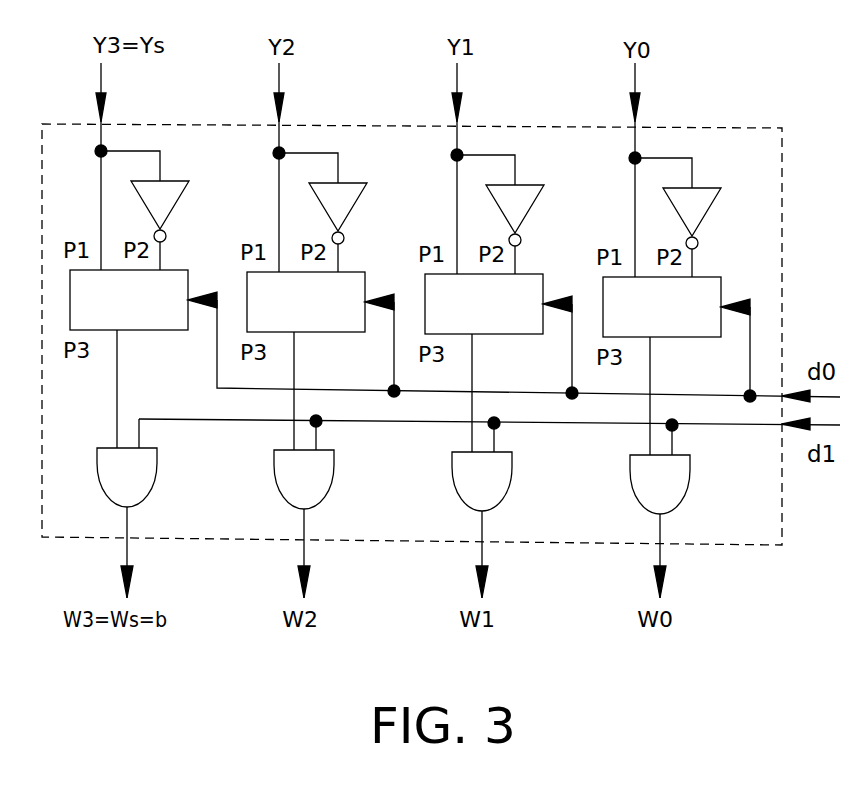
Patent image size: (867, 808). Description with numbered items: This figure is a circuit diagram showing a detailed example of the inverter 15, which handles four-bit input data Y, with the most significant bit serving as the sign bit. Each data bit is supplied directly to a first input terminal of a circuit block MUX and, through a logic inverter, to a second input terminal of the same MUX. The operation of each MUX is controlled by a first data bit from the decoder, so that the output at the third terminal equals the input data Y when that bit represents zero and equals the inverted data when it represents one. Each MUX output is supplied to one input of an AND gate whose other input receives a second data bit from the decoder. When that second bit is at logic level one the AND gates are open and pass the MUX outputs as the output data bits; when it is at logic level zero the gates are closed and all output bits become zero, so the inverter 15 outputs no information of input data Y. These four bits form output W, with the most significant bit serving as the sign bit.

The inverter 15 is at (693, 128).